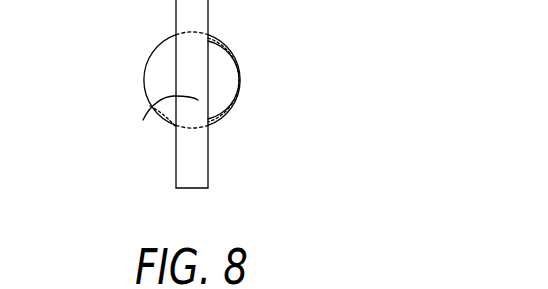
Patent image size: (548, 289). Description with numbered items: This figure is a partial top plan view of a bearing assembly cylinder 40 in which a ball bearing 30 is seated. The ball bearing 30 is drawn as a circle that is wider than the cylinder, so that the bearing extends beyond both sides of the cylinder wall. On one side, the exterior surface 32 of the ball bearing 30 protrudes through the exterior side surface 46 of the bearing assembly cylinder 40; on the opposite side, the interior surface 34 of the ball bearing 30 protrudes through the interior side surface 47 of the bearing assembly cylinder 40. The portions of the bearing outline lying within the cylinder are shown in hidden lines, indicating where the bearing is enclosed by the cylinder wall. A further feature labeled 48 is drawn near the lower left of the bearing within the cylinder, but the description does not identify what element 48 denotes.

The ball bearing 30 is at (238, 59).
The exterior surface 32 is at (147, 85).
The interior surface 34 is at (240, 79).
The bearing assembly cylinder 40 is at (190, 152).
The exterior side surface 46 is at (177, 53).
The interior side surface 47 is at (207, 52).
The tab 48 is at (158, 103).